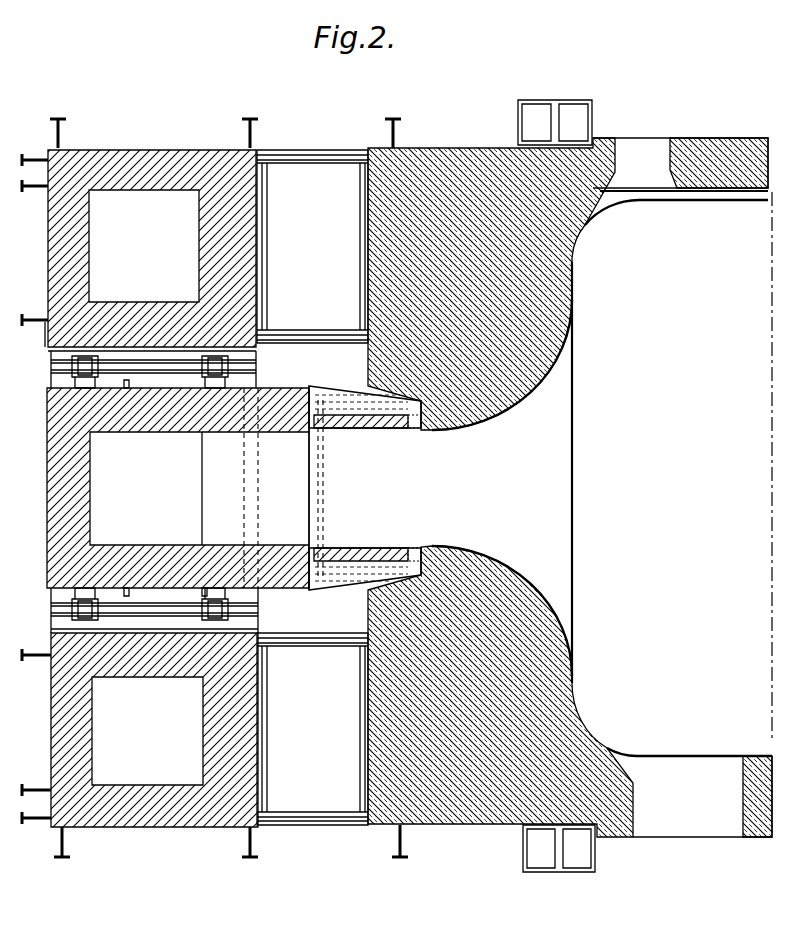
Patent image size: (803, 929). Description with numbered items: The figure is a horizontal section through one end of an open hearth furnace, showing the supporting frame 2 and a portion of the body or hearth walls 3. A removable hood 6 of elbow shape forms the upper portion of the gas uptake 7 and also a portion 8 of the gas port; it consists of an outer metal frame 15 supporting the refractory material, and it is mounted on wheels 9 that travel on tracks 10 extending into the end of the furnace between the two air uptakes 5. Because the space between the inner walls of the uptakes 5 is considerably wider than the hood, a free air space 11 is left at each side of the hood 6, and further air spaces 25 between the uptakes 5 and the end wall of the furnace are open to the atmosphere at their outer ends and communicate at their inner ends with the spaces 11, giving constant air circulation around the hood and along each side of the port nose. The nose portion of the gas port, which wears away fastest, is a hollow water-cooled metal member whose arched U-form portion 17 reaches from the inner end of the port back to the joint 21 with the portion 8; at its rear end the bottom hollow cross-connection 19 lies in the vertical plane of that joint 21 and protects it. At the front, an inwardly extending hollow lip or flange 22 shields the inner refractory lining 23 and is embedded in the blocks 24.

The supporting frame 2 is at (27, 158).
The body or hearth walls 3 is at (718, 148).
The air uptakes 5 is at (153, 488).
The removable hood 6 is at (46, 512).
The gas uptake 7 is at (170, 488).
The gas port portion 8 is at (262, 488).
The wheels 9 is at (92, 370).
The tracks 10 is at (170, 371).
The free air space 11 is at (65, 356).
The outer metal frame 15 is at (302, 388).
The arched U-form portion 17 is at (352, 588).
The bottom hollow cross-connection 19 is at (325, 498).
The joint 21 is at (308, 522).
The hollow lip or flange 22 is at (418, 430).
The inner refractory lining 23 is at (388, 430).
The blocks 24 is at (510, 396).
The air spaces 25 is at (312, 487).